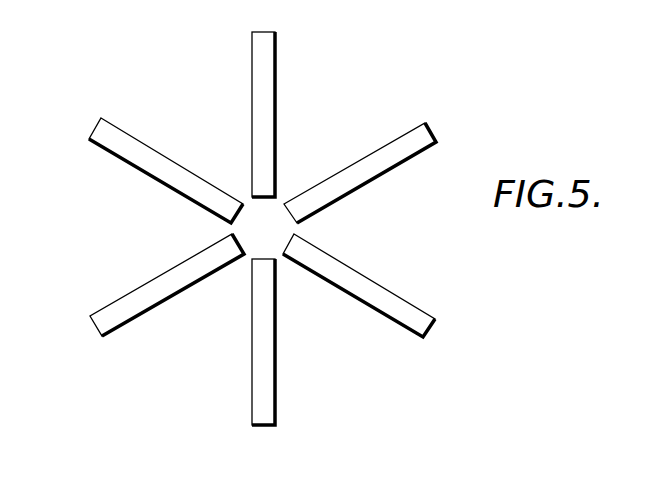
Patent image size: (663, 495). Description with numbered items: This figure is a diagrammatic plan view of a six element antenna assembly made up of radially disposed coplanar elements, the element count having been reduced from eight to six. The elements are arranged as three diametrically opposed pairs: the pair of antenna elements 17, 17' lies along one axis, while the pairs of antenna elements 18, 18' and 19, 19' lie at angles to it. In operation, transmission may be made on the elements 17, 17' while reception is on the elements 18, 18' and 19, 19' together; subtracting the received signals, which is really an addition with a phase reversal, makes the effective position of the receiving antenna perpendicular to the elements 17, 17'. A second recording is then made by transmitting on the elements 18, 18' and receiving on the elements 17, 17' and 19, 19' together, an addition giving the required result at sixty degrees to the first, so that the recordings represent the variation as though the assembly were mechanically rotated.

The antenna element 17 is at (287, 111).
The antenna element 17' is at (268, 366).
The antenna element 18 is at (381, 169).
The antenna element 18' is at (144, 289).
The antenna element 19 is at (378, 291).
The antenna element 19' is at (143, 167).